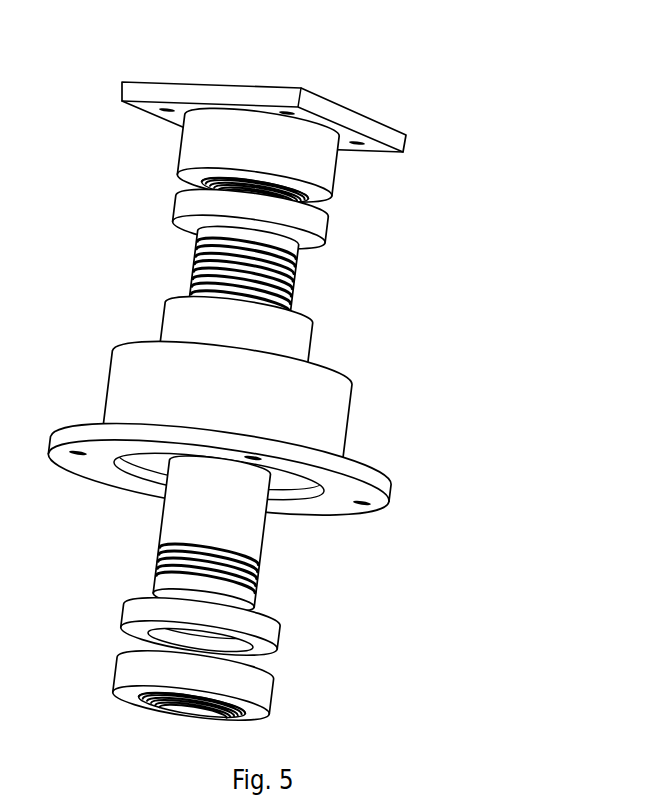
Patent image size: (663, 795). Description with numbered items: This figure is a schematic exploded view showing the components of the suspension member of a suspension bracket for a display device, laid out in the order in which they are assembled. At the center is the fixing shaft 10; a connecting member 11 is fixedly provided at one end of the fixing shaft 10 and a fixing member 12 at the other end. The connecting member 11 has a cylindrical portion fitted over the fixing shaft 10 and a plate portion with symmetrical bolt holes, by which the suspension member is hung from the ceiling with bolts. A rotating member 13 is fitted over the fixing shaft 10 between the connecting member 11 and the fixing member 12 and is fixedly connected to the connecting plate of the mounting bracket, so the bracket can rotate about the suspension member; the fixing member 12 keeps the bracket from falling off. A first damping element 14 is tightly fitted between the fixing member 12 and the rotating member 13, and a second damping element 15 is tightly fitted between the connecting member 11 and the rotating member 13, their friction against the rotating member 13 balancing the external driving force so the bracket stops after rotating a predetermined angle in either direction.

The fixing shaft 10 is at (263, 537).
The connecting member 11 is at (345, 105).
The fixing member 12 is at (273, 688).
The rotating member 13 is at (351, 397).
The first damping element 14 is at (279, 628).
The second damping element 15 is at (331, 223).